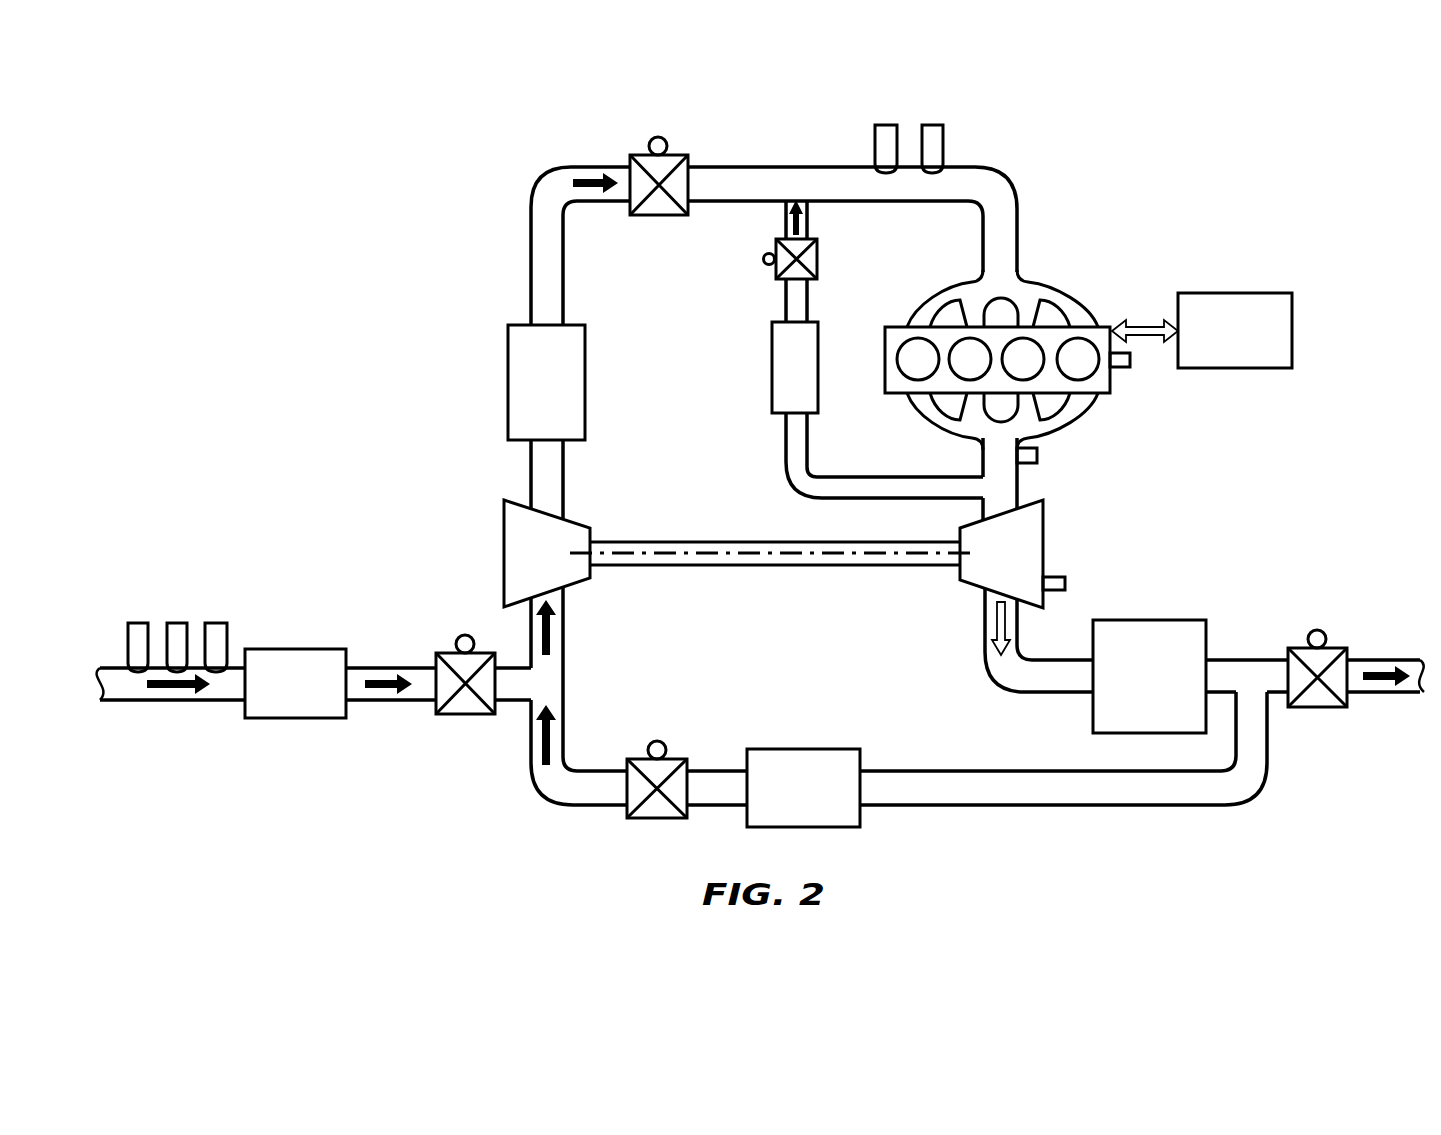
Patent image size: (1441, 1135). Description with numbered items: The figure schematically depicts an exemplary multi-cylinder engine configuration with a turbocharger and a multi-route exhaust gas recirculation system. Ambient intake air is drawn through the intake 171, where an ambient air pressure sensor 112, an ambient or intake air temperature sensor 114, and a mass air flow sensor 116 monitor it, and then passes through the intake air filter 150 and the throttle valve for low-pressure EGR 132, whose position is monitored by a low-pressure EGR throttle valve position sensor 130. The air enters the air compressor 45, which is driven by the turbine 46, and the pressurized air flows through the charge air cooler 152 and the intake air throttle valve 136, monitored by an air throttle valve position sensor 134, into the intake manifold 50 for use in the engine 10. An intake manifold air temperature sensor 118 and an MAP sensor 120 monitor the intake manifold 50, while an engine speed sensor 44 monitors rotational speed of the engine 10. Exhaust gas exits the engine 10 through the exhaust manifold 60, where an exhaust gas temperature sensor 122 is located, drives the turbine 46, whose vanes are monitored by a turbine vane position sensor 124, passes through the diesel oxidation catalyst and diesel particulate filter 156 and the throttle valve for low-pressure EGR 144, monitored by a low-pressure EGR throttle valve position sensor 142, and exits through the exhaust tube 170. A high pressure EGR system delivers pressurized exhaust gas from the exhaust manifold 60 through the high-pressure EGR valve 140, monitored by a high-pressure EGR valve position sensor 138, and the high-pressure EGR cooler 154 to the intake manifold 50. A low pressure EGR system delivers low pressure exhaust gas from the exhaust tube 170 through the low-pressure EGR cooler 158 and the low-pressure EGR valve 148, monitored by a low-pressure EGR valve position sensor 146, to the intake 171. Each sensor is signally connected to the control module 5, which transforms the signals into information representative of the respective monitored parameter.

The control module 5 is at (1235, 330).
The engine 10 is at (1100, 327).
The engine speed sensor 44 is at (1125, 368).
The air compressor 45 is at (560, 568).
The turbine 46 is at (1016, 568).
The intake manifold 50 is at (1042, 285).
The exhaust manifold 60 is at (1075, 425).
The ambient air pressure sensor 112 is at (140, 631).
The ambient or intake air temperature sensor 114 is at (178, 631).
The mass air flow sensor 116 is at (218, 631).
The intake manifold air temperature sensor 118 is at (886, 125).
The MAP sensor 120 is at (934, 125).
The exhaust gas temperature sensor 122 is at (1037, 455).
The turbine vane position sensor 124 is at (1055, 577).
The low-pressure EGR throttle valve position sensor 130 is at (462, 635).
The throttle valve for low-pressure EGR 132 is at (470, 714).
The air throttle valve position sensor 134 is at (657, 137).
The intake air throttle valve 136 is at (660, 216).
The high-pressure EGR valve position sensor 138 is at (763, 259).
The high-pressure EGR valve 140 is at (817, 262).
The low-pressure EGR throttle valve position sensor 142 is at (1317, 630).
The throttle valve for low-pressure EGR 144 is at (1320, 707).
The low-pressure EGR valve position sensor 146 is at (655, 741).
The low-pressure EGR valve 148 is at (660, 818).
The intake air filter 150 is at (318, 699).
The charge air cooler 152 is at (546, 382).
The high-pressure EGR cooler 154 is at (815, 382).
The diesel oxidation catalyst and diesel particulate filter 156 is at (1170, 691).
The low-pressure EGR cooler 158 is at (824, 802).
The exhaust tube 170 is at (1375, 660).
The intake 171 is at (165, 702).